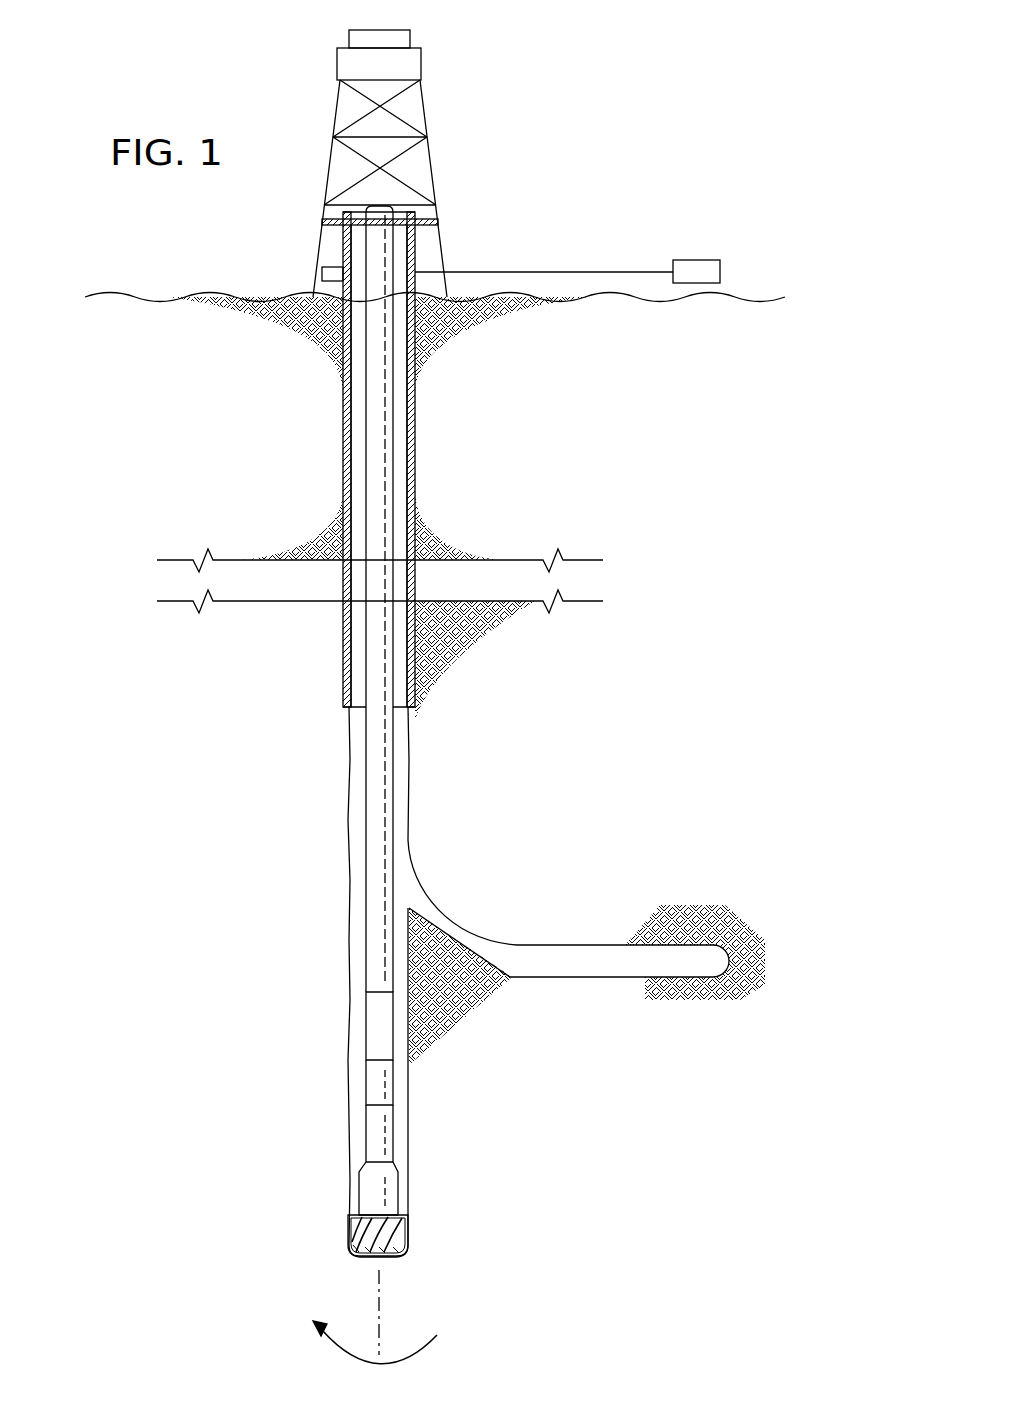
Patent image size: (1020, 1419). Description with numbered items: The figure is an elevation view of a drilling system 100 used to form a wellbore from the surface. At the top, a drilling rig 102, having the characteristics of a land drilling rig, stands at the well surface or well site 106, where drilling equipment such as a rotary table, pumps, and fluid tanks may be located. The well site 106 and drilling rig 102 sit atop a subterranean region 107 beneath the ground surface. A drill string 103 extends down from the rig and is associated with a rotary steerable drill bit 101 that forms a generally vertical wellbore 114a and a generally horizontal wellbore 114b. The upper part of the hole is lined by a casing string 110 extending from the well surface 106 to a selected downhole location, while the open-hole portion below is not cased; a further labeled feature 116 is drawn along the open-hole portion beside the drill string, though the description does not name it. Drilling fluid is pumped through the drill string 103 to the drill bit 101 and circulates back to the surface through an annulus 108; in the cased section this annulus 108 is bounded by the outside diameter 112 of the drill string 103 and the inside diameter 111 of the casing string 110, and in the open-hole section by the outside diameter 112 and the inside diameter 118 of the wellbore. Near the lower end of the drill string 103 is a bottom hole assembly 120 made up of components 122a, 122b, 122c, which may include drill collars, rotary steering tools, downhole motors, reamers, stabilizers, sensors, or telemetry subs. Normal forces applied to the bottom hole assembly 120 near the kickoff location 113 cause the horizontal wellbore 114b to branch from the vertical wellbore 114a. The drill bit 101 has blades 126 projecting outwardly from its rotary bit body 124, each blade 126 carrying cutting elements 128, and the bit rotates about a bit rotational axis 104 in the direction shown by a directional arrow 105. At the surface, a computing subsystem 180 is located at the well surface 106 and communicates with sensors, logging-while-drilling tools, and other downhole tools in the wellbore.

The drilling system 100 is at (597, 60).
The rotary steerable drill bit 101 is at (244, 1225).
The drilling rig 102 is at (260, 98).
The drill string 103 is at (403, 410).
The bit rotational axis 104 is at (375, 1286).
The directional arrow 105 is at (440, 1336).
The well surface or well site 106 is at (428, 252).
The subterranean region 107 is at (226, 876).
The annulus 108 is at (353, 421).
The casing string 110 is at (343, 470).
The inside diameter of casing string 111 is at (410, 471).
The outside diameter of drill string 112 is at (364, 644).
The kickoff location 113 is at (406, 795).
The generally vertical wellbore 114a is at (246, 688).
The generally horizontal wellbore 114b is at (587, 888).
The annulus 116 is at (358, 826).
The inside diameter of wellbore 118 is at (350, 900).
The bottom hole assembly 120 is at (432, 1112).
The component of bottom hole assembly 122a is at (372, 1014).
The component of bottom hole assembly 122b is at (372, 1082).
The component of bottom hole assembly 122c is at (372, 1128).
The rotary bit body 124 is at (359, 1185).
The blades 126 is at (358, 1222).
The cutting elements 128 is at (401, 1257).
The computing subsystem 180 is at (698, 259).